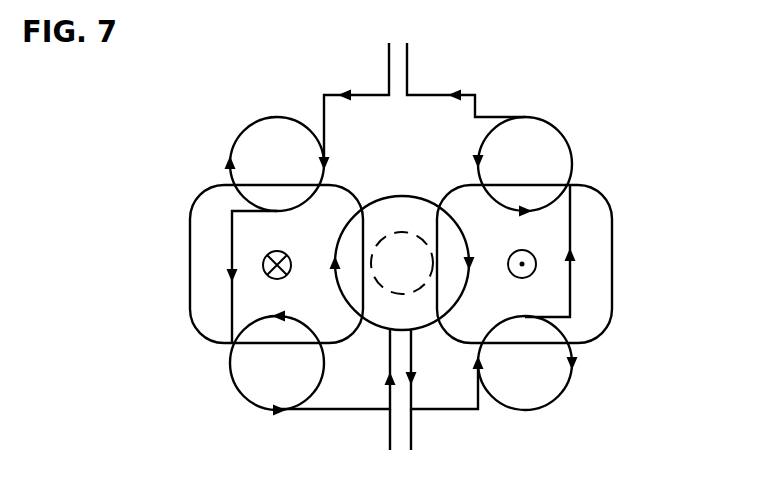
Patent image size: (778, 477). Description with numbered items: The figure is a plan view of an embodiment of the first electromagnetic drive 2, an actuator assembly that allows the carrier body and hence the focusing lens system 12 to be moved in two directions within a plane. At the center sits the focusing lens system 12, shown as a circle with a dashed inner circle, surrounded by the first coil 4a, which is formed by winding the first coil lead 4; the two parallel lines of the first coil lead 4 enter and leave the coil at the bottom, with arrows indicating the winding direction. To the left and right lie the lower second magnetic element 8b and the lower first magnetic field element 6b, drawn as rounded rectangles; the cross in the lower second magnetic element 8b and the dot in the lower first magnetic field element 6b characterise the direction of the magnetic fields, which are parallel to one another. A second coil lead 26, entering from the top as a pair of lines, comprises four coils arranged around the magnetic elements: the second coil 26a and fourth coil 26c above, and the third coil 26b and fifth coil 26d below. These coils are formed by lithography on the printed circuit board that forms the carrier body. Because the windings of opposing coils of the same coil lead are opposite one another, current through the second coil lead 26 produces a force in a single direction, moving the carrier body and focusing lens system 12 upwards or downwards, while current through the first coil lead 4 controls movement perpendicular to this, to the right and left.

The first electromagnetic drive 2 is at (662, 78).
The first coil lead 4 is at (411, 420).
The first coil 4a is at (420, 328).
The lower first magnetic field element 6b is at (610, 244).
The lower second magnetic element 8b is at (190, 241).
The focusing lens system 12 is at (407, 231).
The second coil lead 26 is at (414, 68).
The second coil 26a is at (277, 116).
The third coil 26b is at (242, 396).
The fourth coil 26c is at (527, 117).
The fifth coil 26d is at (520, 410).